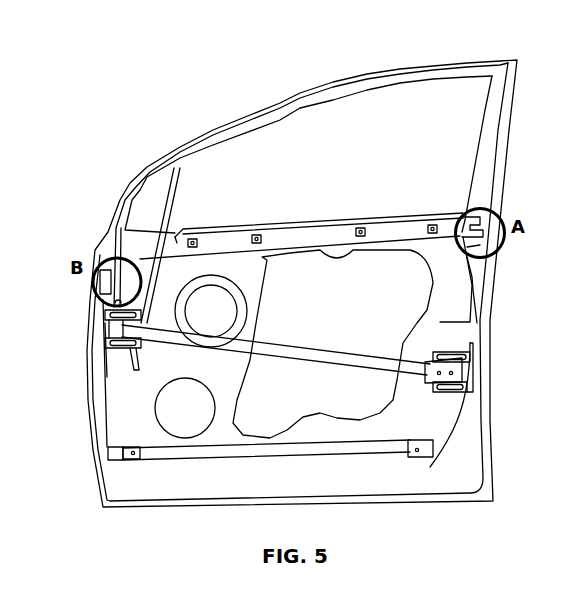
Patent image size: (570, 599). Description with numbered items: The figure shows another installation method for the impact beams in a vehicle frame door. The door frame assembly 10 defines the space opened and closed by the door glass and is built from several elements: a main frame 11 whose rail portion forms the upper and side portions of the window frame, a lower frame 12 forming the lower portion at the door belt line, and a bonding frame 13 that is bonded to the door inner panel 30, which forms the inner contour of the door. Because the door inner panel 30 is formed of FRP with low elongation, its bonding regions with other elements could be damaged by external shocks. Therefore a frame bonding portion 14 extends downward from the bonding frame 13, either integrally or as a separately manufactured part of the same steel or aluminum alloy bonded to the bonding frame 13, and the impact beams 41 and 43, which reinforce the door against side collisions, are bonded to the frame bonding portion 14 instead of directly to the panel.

The door frame assembly 10 is at (290, 96).
The main frame 11 is at (225, 137).
The lower frame 12 is at (388, 215).
The bonding frame 13 is at (478, 248).
The frame bonding portion 14 is at (100, 333).
The door inner panel 30 is at (237, 268).
The impact beam 41 is at (322, 355).
The impact beam 43 is at (315, 452).